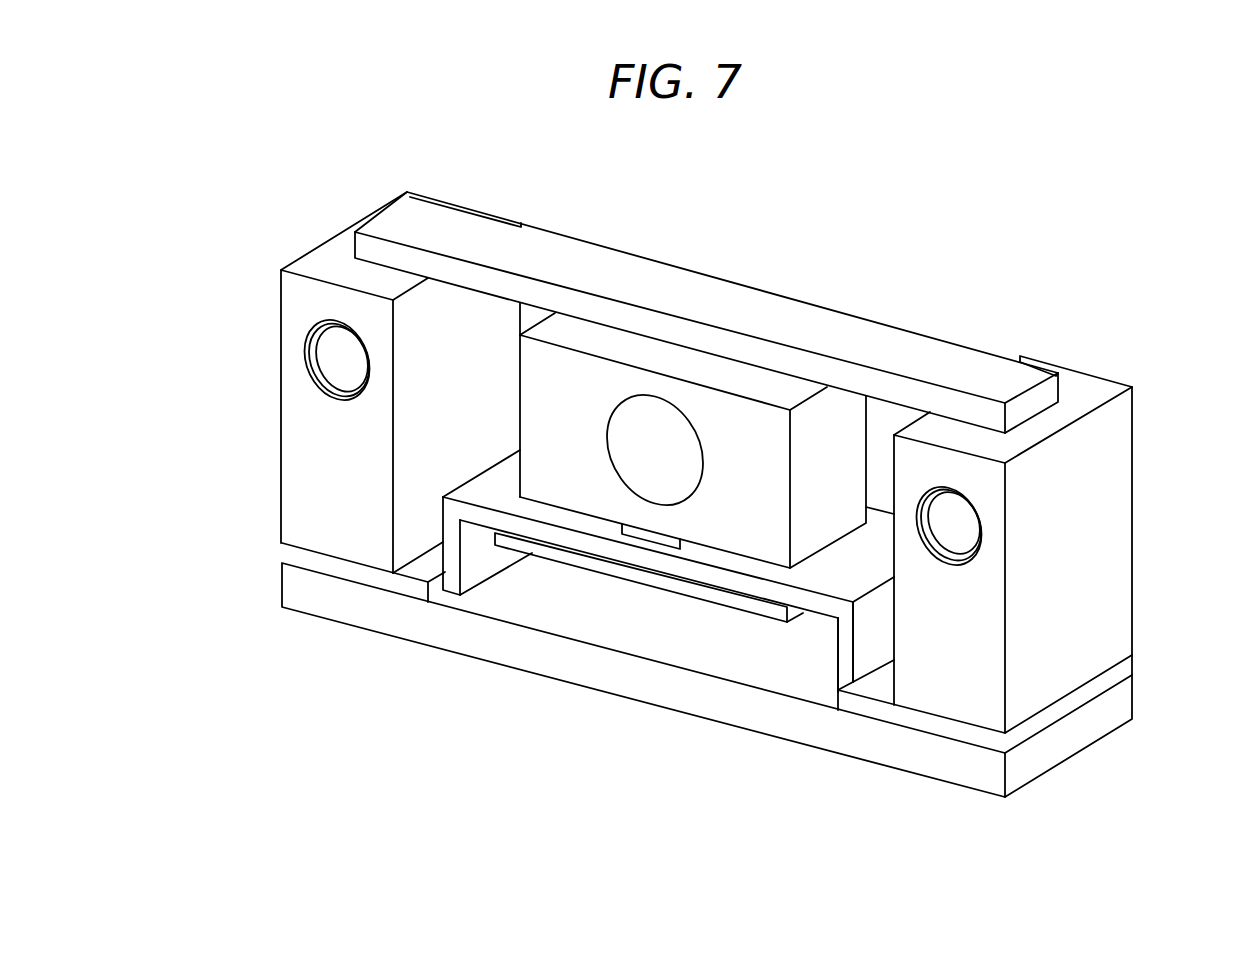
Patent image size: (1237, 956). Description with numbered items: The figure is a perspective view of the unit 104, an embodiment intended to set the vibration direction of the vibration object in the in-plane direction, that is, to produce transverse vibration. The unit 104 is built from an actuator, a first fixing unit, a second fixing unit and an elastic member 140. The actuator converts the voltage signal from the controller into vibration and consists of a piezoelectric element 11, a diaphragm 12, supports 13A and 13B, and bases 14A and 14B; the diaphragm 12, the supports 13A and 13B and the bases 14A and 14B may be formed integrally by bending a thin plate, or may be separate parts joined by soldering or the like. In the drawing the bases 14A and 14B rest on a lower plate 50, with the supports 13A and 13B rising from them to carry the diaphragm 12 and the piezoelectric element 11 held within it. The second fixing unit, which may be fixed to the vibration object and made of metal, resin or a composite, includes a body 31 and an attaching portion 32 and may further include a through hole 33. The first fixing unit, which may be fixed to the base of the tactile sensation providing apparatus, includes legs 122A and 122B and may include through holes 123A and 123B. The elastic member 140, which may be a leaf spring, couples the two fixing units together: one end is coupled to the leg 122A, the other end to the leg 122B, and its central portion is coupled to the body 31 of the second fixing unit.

The unit 104 is at (960, 264).
The elastic member 140 is at (688, 288).
The leg 122A is at (318, 460).
The leg 122B is at (965, 600).
The through hole 123A is at (333, 358).
The through hole 123B is at (958, 524).
The base 50 is at (295, 583).
The base 14A is at (355, 575).
The base 14B is at (918, 718).
The diaphragm 12 is at (487, 480).
The support 13A is at (457, 558).
The support 13B is at (843, 650).
The piezoelectric element 11 is at (556, 555).
The body 31 is at (735, 505).
The attaching portion 32 is at (664, 540).
The through hole 33 is at (620, 410).